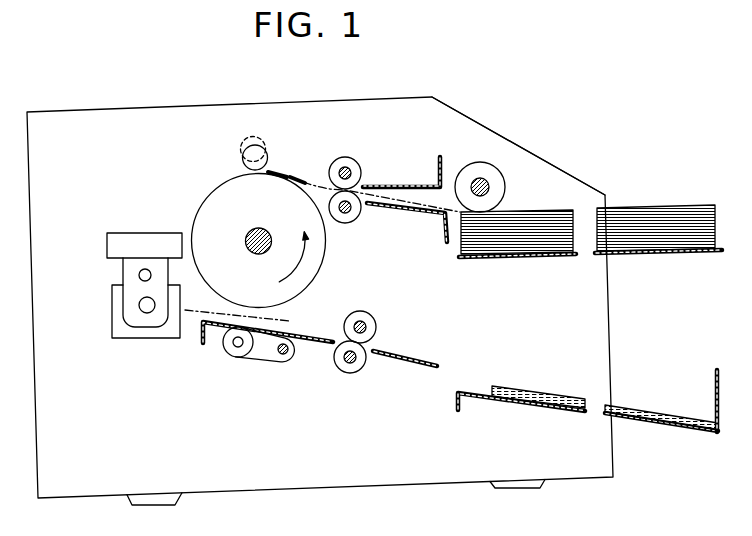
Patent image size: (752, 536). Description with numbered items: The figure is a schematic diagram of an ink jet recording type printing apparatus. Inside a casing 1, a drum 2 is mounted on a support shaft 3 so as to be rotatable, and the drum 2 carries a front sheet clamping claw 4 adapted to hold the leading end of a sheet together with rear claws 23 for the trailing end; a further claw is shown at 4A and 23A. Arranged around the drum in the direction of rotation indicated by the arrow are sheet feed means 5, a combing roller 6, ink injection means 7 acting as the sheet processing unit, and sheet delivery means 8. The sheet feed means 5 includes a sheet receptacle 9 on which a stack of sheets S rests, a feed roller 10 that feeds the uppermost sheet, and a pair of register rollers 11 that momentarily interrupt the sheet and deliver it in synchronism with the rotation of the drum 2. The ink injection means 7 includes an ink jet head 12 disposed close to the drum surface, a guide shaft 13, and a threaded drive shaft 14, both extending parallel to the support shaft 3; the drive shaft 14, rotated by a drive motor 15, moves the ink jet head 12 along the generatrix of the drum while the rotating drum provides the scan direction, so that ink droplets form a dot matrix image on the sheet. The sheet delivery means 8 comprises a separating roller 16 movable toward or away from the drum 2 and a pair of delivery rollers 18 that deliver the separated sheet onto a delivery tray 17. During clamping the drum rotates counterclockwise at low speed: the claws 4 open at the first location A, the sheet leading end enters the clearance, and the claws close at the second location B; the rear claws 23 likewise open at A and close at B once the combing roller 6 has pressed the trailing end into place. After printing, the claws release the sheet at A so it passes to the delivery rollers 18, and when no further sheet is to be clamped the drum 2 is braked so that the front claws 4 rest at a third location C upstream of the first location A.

The casing 1 is at (457, 115).
The drum 2 is at (215, 192).
The support shaft 3 is at (270, 238).
The front sheet clamping claw 4 is at (302, 178).
The lower paper guide plate 4A is at (213, 312).
The sheet feed means 5 is at (530, 152).
The combing roller 6 is at (243, 164).
The ink injection means 7 is at (125, 284).
The sheet delivery means 8 is at (247, 375).
The sheet receptacle 9 is at (505, 259).
The feed roller 10 is at (507, 190).
The register rollers 11 is at (360, 162).
The ink jet head 12 is at (162, 235).
The guide shaft 13 is at (139, 274).
The drive shaft 14 is at (139, 305).
The drive motor 15 is at (127, 338).
The separating roller 16 is at (236, 357).
The delivery tray 17 is at (505, 403).
The delivery rollers 18 is at (382, 331).
The rear claws 23 is at (281, 172).
The separating claw 23A is at (268, 318).
The sheets S is at (550, 198).
The first location A is at (242, 304).
The second location B is at (252, 178).
The third location C is at (195, 220).